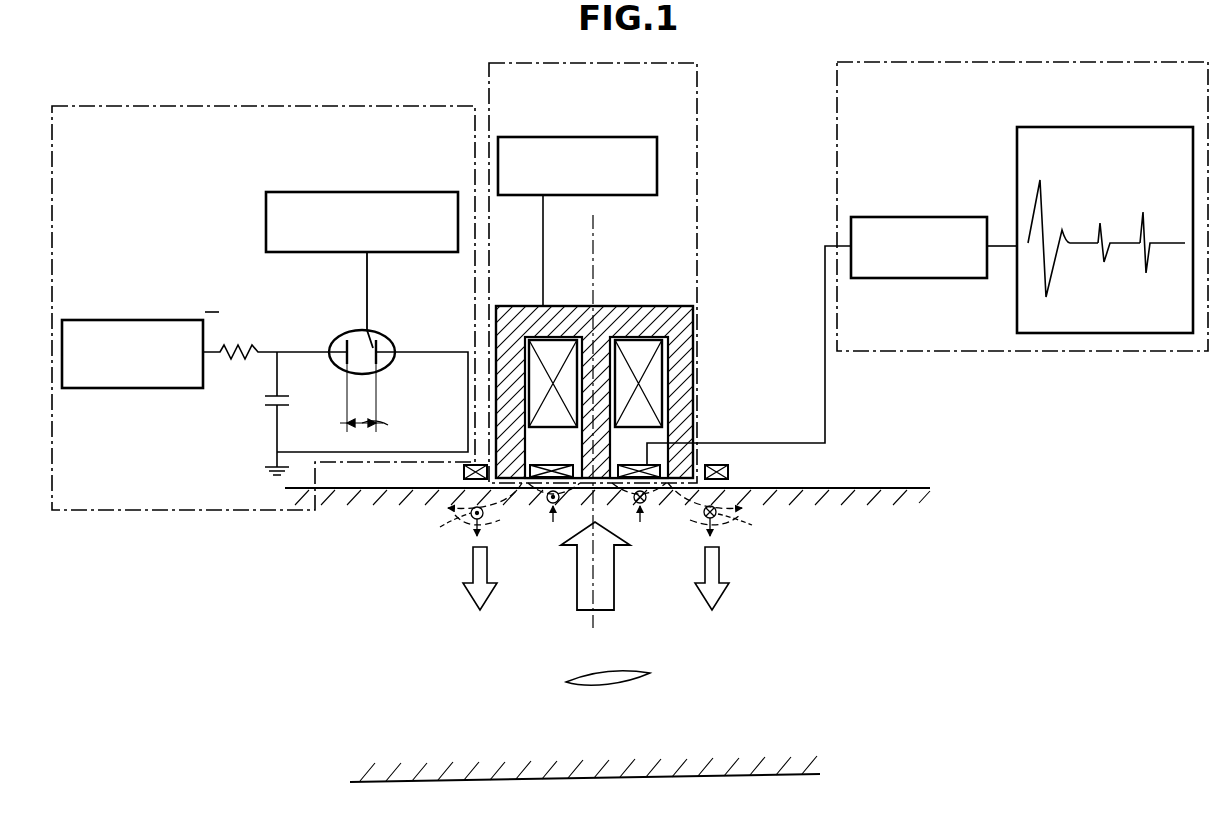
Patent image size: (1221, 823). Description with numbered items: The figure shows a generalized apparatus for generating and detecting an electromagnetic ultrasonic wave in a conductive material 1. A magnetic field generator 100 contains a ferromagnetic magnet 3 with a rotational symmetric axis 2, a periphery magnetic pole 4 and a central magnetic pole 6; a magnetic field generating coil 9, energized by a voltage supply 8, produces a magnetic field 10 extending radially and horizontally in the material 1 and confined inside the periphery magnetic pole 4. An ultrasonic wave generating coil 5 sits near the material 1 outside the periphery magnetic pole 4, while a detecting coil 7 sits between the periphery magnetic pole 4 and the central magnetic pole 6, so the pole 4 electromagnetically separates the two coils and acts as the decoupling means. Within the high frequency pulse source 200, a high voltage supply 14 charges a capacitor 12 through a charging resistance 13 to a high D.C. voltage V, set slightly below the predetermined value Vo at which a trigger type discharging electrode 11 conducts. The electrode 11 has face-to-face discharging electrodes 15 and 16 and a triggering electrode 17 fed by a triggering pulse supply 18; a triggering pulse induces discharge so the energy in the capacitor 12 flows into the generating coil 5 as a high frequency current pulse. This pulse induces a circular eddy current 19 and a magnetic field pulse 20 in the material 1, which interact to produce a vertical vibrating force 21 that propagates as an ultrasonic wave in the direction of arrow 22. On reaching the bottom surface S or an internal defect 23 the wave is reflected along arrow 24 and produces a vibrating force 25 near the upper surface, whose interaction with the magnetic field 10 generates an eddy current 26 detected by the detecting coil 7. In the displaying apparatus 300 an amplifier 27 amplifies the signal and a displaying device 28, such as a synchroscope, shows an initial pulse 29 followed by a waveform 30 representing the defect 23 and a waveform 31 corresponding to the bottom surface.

The conductive material 1 is at (862, 488).
The rotational symmetric axis 2 is at (594, 241).
The ferromagnetic magnet 3 is at (606, 306).
The periphery magnetic pole 4 is at (680, 376).
The ultrasonic wave generating coil 5 is at (464, 472).
The central magnetic pole 6 is at (646, 340).
The detecting coil 7 is at (562, 465).
The voltage supply 8 is at (657, 170).
The magnetic field generating coil 9 is at (555, 350).
The magnetic field 10 is at (522, 500).
The trigger type discharging electrode 11 is at (380, 368).
The capacitor 12 is at (287, 402).
The charging resistance 13 is at (252, 348).
The high voltage supply 14 is at (152, 320).
The discharging electrode 15 is at (345, 345).
The discharging electrode 16 is at (378, 345).
The triggering electrode 17 is at (368, 330).
The triggering pulse supply 18 is at (266, 220).
The eddy current 19 is at (472, 520).
The magnetic field pulse 20 is at (596, 523).
The vibrating force 21 is at (475, 540).
The arrow 22 is at (470, 596).
The internal defect 23 is at (636, 672).
The arrow 24 is at (577, 570).
The vibrating force 25 is at (550, 522).
The eddy current 26 is at (558, 503).
The amplifier 27 is at (924, 217).
The displaying device 28 is at (1017, 148).
The initial pulse 29 is at (1048, 208).
The waveform 30 is at (1102, 226).
The waveform 31 is at (1146, 224).
The magnetic field generator 100 is at (697, 148).
The high frequency pulse source 200 is at (340, 106).
The displaying apparatus 300 is at (915, 62).
The bottom surface S is at (775, 778).
The high D.C. voltage V is at (211, 325).
The predetermined value Vo is at (378, 401).